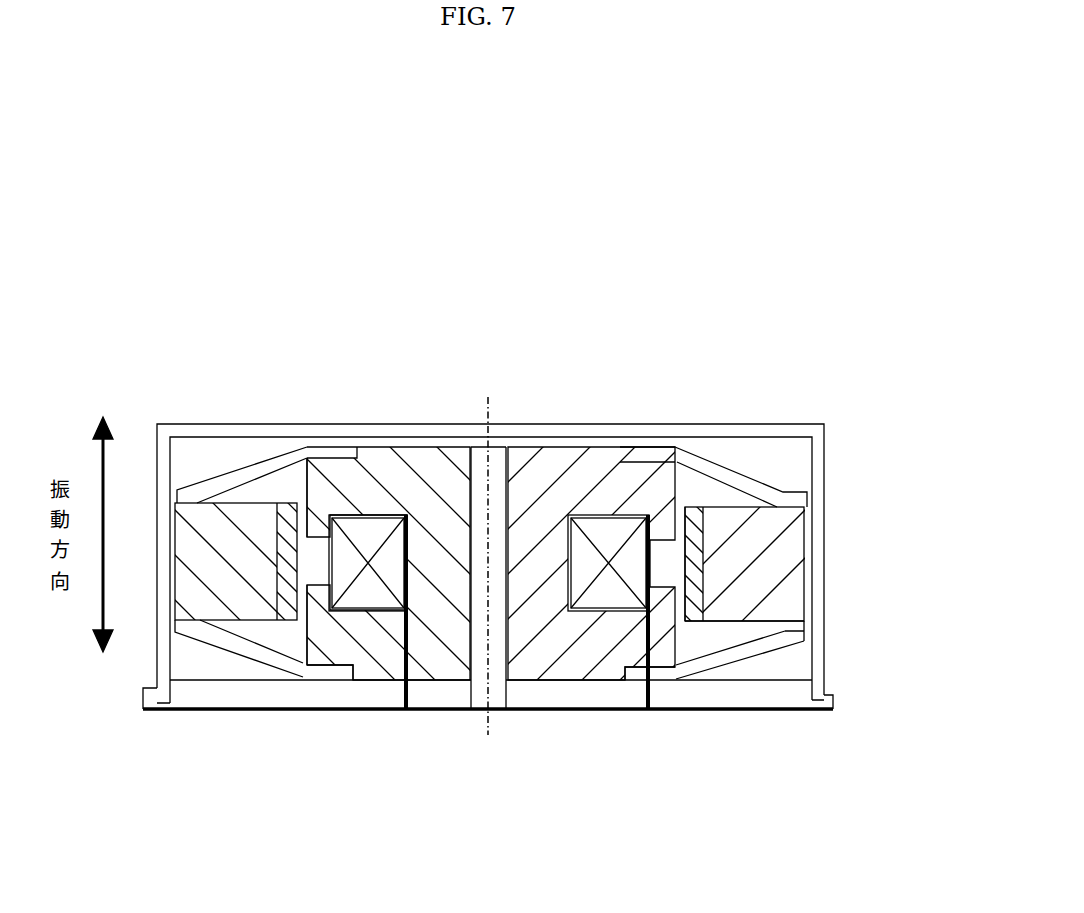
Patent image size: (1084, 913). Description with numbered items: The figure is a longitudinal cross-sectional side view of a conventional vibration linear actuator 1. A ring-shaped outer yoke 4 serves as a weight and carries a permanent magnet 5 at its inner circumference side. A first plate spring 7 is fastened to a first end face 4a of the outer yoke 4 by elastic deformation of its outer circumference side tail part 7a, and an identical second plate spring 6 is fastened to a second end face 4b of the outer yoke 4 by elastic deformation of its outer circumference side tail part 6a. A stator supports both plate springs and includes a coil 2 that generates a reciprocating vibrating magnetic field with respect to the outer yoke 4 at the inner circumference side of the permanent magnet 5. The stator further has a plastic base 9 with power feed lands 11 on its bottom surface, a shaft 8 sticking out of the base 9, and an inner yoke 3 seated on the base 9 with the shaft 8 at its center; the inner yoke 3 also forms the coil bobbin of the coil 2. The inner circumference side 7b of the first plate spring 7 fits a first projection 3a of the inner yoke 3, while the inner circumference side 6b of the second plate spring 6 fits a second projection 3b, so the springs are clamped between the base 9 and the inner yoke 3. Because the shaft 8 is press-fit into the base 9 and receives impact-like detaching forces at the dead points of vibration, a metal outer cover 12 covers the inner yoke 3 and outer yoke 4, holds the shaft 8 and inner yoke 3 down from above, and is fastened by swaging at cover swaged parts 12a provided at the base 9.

The vibration linear actuator 1 is at (562, 402).
The coil 2 is at (613, 530).
The inner yoke 3 is at (422, 463).
The first projection 3a is at (623, 448).
The second projection 3b is at (367, 675).
The outer yoke 4 is at (780, 518).
The first end face 4a is at (728, 505).
The second end face 4b is at (740, 620).
The permanent magnet 5 is at (287, 517).
The second plate spring 6 is at (703, 660).
The outer circumference side tail part 6a is at (787, 638).
The inner circumference side 6b is at (662, 673).
The first plate spring 7 is at (297, 453).
The outer circumference side tail part 7a is at (785, 500).
The inner circumference side 7b is at (339, 450).
The shaft 8 is at (500, 463).
The plastic base 9 is at (547, 698).
The power feed lands 11 is at (298, 713).
The outer cover 12 is at (150, 679).
The cover swaged parts 12a is at (830, 693).